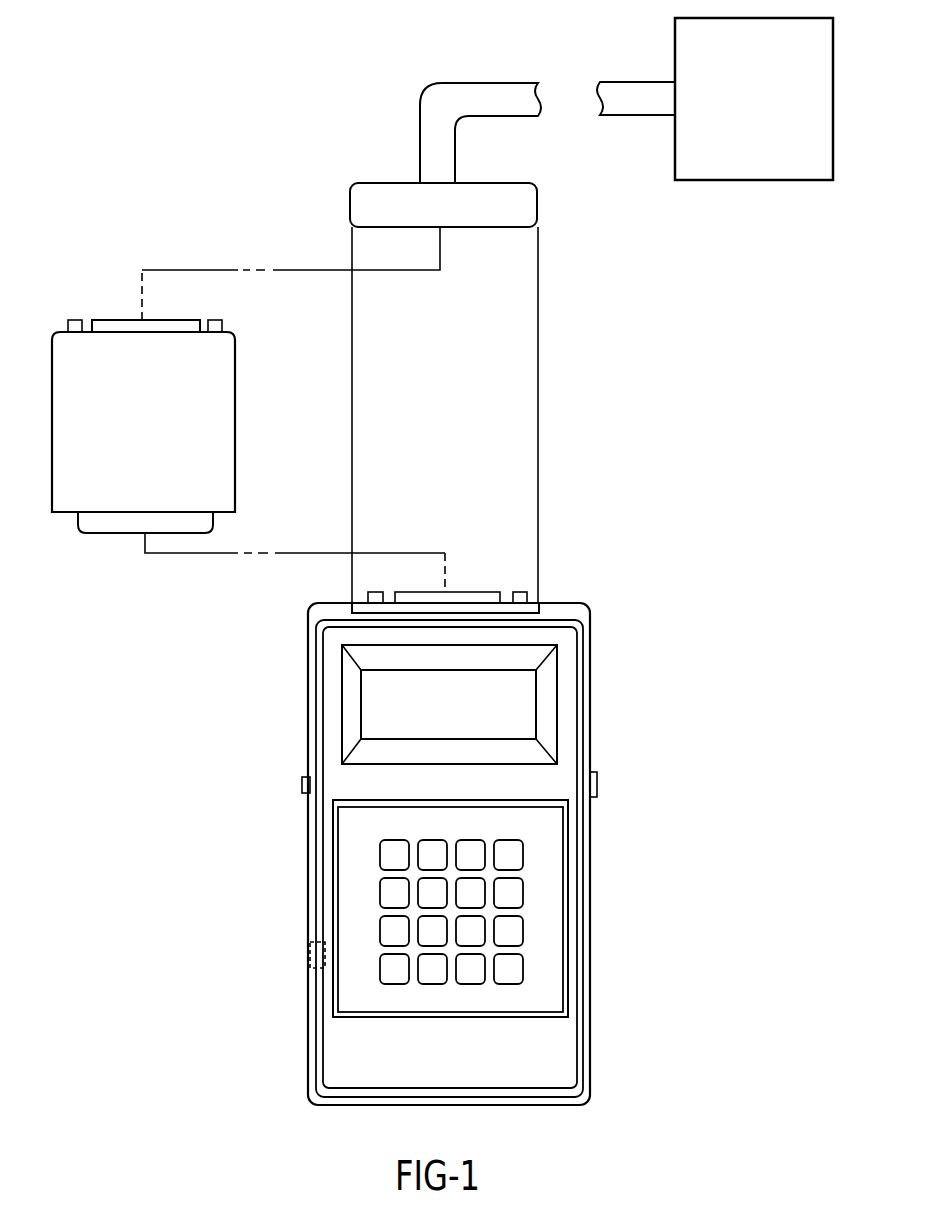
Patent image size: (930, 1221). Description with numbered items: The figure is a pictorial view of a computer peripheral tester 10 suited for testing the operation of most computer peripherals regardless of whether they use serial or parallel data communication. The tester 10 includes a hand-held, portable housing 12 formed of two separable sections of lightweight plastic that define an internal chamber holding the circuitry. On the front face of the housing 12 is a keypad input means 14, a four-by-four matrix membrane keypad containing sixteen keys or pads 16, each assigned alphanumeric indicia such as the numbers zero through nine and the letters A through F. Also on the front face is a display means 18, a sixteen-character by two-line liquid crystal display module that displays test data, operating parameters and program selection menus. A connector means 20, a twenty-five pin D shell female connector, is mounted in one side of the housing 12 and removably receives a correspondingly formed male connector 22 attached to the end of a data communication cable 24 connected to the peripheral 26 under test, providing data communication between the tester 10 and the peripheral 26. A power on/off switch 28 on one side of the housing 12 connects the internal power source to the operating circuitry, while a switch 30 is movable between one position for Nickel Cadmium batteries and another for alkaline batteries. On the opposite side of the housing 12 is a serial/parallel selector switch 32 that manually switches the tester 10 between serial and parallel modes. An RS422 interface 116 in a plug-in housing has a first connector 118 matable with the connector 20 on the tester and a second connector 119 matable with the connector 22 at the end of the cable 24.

The computer peripheral tester 10 is at (415, 818).
The housing 12 is at (309, 853).
The keypad input means 14 is at (451, 908).
The keys or pads 16 is at (478, 836).
The display means 18 is at (523, 715).
The connector means 20 is at (507, 559).
The male connector 22 is at (533, 181).
The data communication cable 24 is at (490, 58).
The peripheral 26 is at (720, 167).
The power on/off switch 28 is at (303, 782).
The switch 30 is at (307, 952).
The serial/parallel selector switch 32 is at (597, 792).
The RS422 interface 116 is at (248, 408).
The first connector 118 is at (207, 527).
The second connector 119 is at (188, 320).